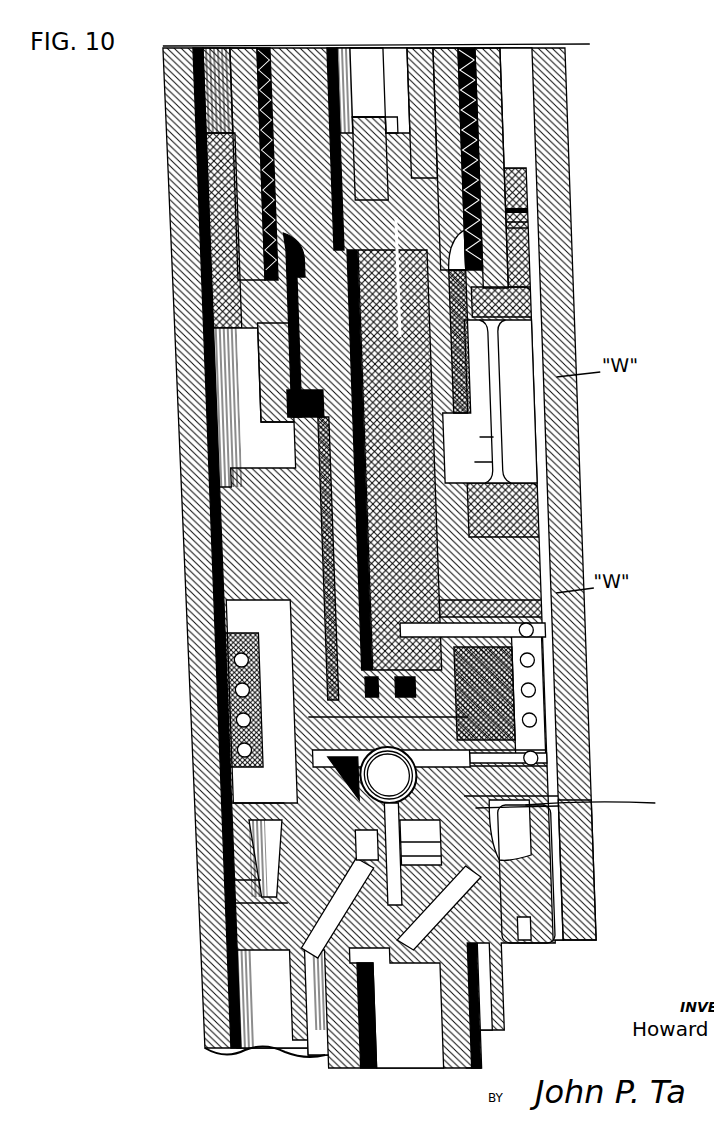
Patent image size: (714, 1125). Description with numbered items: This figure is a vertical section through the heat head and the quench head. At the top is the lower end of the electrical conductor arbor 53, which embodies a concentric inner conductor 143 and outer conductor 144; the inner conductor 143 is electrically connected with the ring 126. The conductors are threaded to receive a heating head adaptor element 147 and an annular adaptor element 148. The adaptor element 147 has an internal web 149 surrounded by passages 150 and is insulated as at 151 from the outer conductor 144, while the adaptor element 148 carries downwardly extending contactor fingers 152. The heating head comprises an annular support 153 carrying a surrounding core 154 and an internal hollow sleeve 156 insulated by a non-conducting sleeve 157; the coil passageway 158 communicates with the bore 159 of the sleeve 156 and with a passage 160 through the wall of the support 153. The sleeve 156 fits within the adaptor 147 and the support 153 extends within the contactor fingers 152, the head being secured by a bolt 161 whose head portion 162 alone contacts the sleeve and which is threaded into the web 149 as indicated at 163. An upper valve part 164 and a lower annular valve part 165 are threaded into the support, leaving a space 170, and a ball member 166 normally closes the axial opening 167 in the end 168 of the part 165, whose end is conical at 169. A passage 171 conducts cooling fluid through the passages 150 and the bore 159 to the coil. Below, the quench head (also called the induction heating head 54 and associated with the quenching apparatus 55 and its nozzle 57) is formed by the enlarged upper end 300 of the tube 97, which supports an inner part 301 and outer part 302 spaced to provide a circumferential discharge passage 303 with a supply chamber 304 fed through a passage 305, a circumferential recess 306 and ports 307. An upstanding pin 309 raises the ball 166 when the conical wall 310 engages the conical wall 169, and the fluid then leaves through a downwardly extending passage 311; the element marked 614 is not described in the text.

The electrical conductor arbor 53 is at (248, 50).
The induction heating head 54 is at (526, 681).
The quenching apparatus 55 is at (312, 1070).
The nozzle 57 is at (592, 870).
The tube 97 is at (487, 1067).
The ring 126 is at (485, 430).
The inner conductor 143 is at (453, 50).
The outer conductor 144 is at (495, 50).
The heating head adaptor element 147 is at (402, 58).
The adaptor element 148 is at (520, 190).
The internal web 149 is at (393, 112).
The passages 150 is at (352, 118).
The insulation 151 is at (277, 258).
The contactor fingers 152 is at (251, 452).
The annular support 153 is at (478, 462).
The core 154 is at (224, 797).
The hollow sleeve 156 is at (265, 378).
The non-conducting sleeve 157 is at (463, 482).
The coil passageway 158 is at (452, 756).
The bore 159 is at (466, 437).
The passage 160 is at (495, 768).
The bolt 161 is at (388, 382).
The head portion 162 is at (322, 668).
The threaded connection 163 is at (383, 122).
The upper valve part 164 is at (431, 738).
The lower annular valve part 165 is at (606, 801).
The ball member 166 is at (352, 785).
The axial opening 167 is at (420, 842).
The end 168 is at (421, 843).
The conical wall 169 is at (532, 806).
The space 170 is at (532, 796).
The passage 171 is at (365, 60).
The enlarged upper end 300 is at (262, 952).
The inner annular part 301 is at (529, 943).
The outer annular part 302 is at (510, 921).
The circumferential discharge passage 303 is at (240, 820).
The supply chamber 304 is at (232, 880).
The passage 305 is at (438, 927).
The circumferential recess 306 is at (259, 930).
The ports 307 is at (245, 905).
The upstanding pin 309 is at (421, 858).
The conical wall 310 is at (493, 831).
The downwardly extending passage 311 is at (266, 986).
The link pin 614 is at (367, 845).